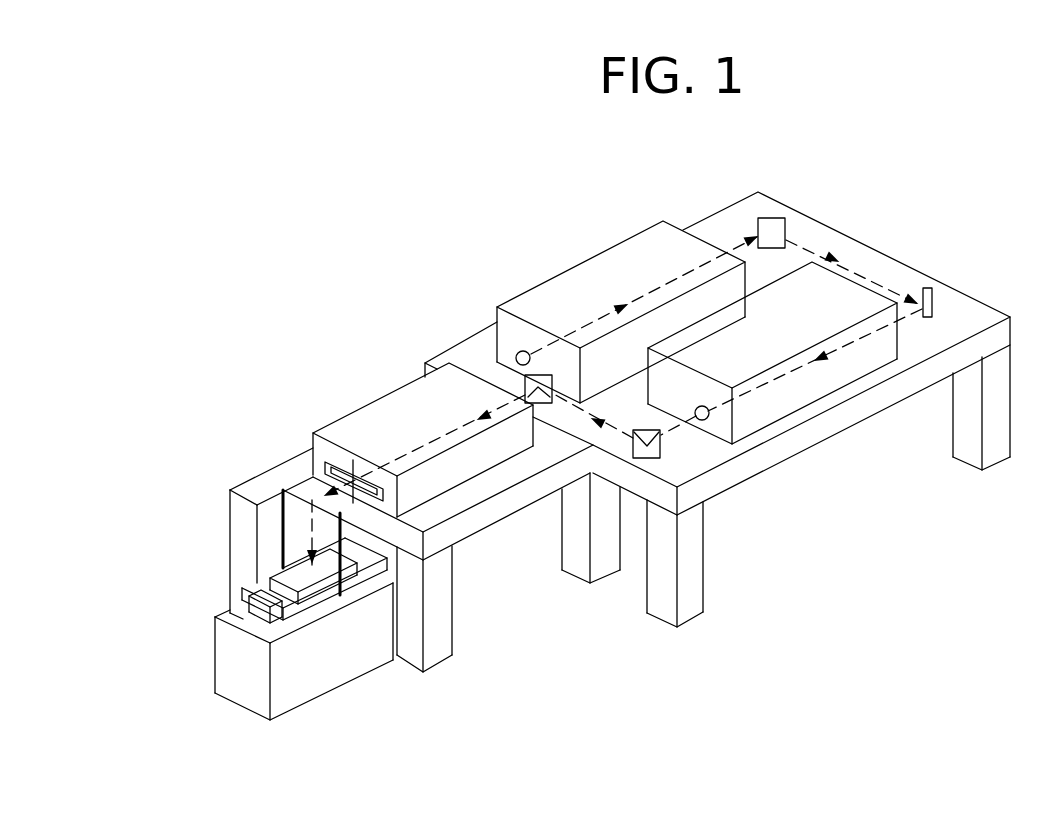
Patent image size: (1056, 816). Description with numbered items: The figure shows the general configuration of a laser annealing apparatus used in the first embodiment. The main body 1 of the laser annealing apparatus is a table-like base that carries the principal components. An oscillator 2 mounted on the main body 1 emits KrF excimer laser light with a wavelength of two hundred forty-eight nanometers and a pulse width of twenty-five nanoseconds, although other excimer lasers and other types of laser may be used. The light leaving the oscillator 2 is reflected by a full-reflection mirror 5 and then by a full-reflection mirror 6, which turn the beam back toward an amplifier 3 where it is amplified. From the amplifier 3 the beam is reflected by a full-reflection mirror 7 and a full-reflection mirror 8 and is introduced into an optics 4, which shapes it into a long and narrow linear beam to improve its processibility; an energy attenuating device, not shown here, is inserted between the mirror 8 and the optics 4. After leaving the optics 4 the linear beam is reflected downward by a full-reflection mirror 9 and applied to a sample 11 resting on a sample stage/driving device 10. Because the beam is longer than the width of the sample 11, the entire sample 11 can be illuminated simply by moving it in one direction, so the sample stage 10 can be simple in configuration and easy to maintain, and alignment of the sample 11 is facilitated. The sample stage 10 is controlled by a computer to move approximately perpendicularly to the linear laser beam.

The main body of the laser annealing apparatus 1 is at (915, 378).
The oscillator 2 is at (566, 284).
The amplifier 3 is at (797, 392).
The optics 4 is at (398, 403).
The full-reflection mirror 5 is at (772, 218).
The full-reflection mirror 6 is at (927, 288).
The full-reflection mirror 7 is at (650, 458).
The full-reflection mirror 8 is at (545, 406).
The full-reflection mirror 9 is at (298, 493).
The sample stage/driving device 10 is at (256, 612).
The sample 11 is at (307, 577).